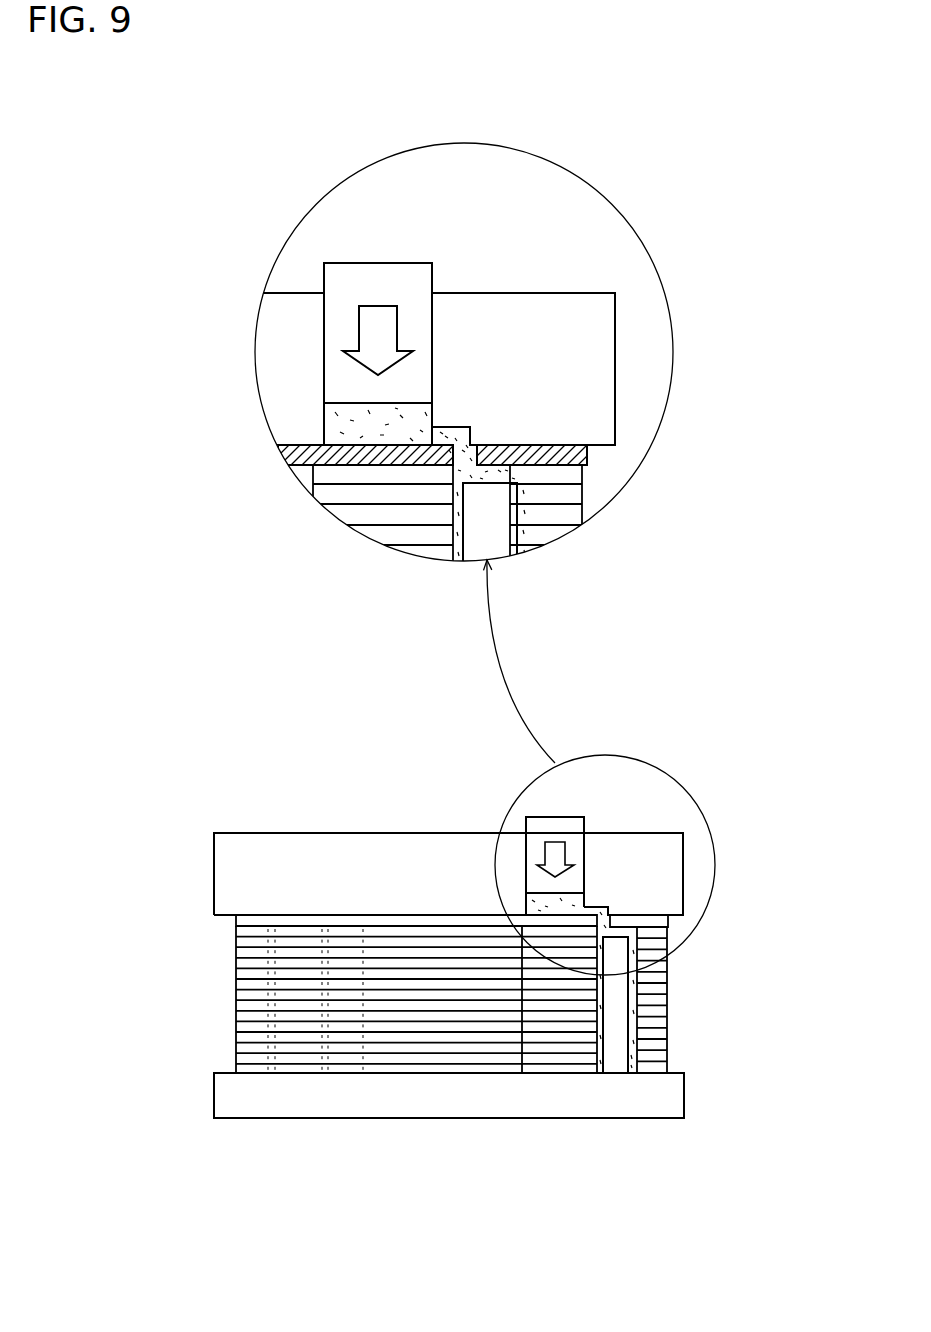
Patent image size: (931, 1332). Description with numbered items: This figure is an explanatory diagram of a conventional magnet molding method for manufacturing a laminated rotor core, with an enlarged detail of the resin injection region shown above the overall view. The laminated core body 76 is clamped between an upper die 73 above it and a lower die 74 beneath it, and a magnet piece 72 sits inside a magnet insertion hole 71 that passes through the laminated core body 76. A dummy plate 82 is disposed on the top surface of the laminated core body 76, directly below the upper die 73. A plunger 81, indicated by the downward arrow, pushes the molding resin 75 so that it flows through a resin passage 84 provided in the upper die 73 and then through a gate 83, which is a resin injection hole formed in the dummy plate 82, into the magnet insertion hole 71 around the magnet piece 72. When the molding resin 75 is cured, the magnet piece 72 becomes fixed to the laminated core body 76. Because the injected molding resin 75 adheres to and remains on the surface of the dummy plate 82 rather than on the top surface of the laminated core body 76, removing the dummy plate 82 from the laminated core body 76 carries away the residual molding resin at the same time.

The magnet insertion hole 71 is at (632, 1067).
The magnet piece 72 is at (477, 533).
The upper die 73 is at (592, 328).
The lower die 74 is at (692, 1092).
The molding resin 75 is at (508, 476).
The laminated core body 76 is at (343, 510).
The plunger 81 is at (367, 282).
The dummy plate 82 is at (552, 452).
The gate 83 is at (470, 440).
The resin passage 84 is at (443, 433).